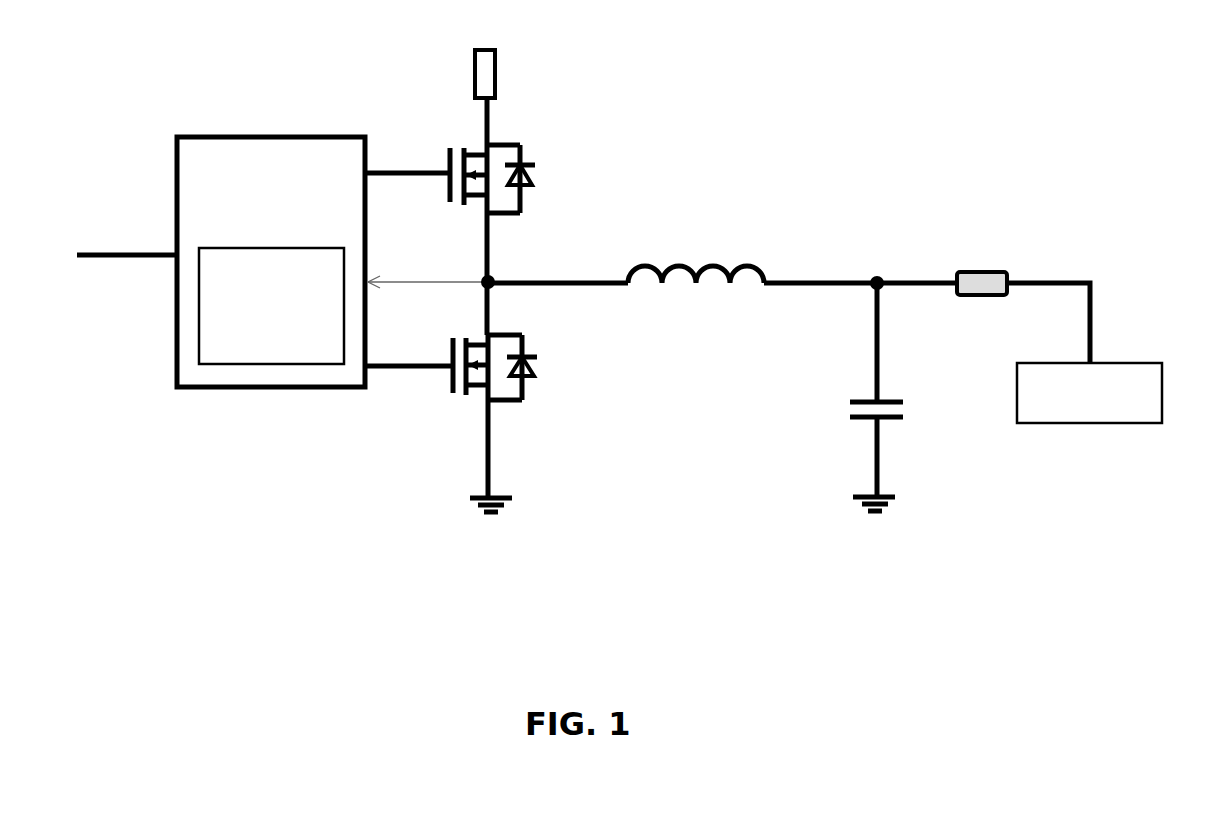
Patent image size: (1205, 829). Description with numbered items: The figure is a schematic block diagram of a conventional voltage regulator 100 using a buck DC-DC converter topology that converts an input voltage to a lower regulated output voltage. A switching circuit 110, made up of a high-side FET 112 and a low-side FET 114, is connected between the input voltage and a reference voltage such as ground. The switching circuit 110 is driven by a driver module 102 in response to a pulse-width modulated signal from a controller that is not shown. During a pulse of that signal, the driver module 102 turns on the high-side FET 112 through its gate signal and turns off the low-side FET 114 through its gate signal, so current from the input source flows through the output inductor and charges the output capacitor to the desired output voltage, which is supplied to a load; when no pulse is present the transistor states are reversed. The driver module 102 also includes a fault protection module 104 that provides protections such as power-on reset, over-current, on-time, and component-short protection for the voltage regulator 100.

The voltage regulator 100 is at (133, 57).
The driver module 102 is at (265, 268).
The fault protection module 104 is at (271, 306).
The switching circuit 110 is at (402, 102).
The high-side FET 112 is at (542, 150).
The low-side FET 114 is at (545, 385).